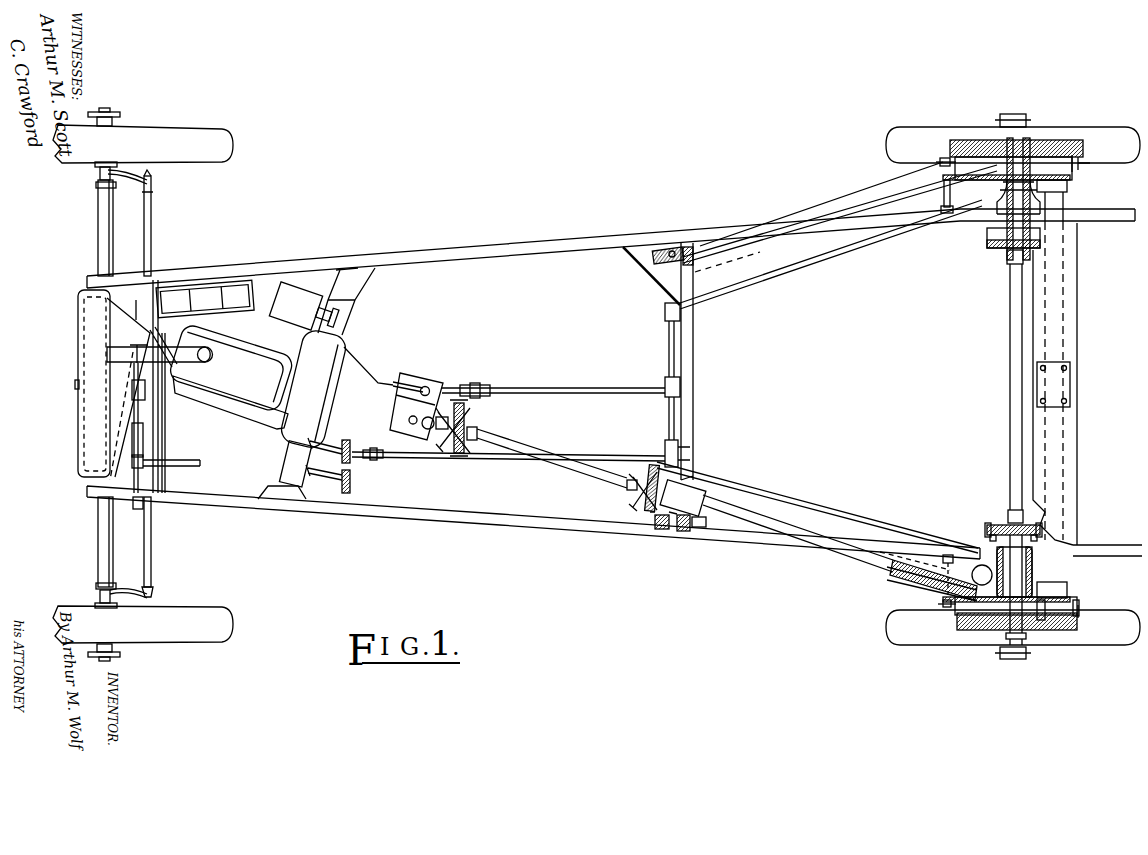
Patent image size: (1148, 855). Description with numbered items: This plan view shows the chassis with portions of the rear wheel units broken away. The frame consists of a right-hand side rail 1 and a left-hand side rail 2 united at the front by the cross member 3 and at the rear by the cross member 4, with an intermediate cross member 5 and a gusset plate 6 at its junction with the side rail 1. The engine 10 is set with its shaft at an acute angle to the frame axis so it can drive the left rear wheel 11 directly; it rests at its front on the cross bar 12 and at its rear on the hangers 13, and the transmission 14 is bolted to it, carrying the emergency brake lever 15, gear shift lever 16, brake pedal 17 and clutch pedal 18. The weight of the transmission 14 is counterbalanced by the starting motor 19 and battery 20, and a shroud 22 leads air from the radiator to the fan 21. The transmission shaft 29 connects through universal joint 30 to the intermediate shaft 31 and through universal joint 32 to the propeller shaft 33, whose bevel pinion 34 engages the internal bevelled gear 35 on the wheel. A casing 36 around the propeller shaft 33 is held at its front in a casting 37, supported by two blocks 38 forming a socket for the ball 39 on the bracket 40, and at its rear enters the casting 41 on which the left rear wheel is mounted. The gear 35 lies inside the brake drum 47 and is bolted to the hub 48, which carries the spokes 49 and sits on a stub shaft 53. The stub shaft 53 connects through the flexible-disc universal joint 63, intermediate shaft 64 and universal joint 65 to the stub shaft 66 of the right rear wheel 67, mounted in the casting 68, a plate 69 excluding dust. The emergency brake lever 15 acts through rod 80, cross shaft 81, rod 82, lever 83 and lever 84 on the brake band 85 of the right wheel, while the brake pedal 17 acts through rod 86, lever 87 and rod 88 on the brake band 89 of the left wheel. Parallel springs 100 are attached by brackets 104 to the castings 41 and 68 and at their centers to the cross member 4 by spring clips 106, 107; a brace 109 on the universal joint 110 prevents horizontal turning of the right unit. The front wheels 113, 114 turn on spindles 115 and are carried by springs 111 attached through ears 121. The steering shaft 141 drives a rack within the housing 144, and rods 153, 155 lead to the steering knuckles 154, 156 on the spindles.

The right-hand side rail 1 is at (545, 241).
The left-hand side rail 2 is at (562, 530).
The cross member 3 is at (85, 290).
The cross member 4 is at (1078, 315).
The intermediate cross member 5 is at (705, 393).
The gusset plate 6 is at (650, 273).
The engine 10 is at (260, 408).
The rear wheel 11 is at (955, 645).
The cross bar 12 is at (165, 443).
The hangers 13 is at (260, 492).
The transmission 14 is at (387, 387).
The emergency brake lever 15 is at (420, 388).
The gear shift lever 16 is at (432, 400).
The brake pedal 17 is at (352, 455).
The clutch pedal 18 is at (350, 483).
The starting motor 19 is at (287, 297).
The battery 20 is at (200, 300).
The fan 21 is at (118, 412).
The shroud 22 is at (122, 325).
The transmission shaft 29 is at (460, 403).
The universal joint 30 is at (480, 425).
The intermediate shaft 31 is at (520, 443).
The universal joint 32 is at (647, 512).
The propeller shaft 33 is at (900, 574).
The bevel pinion 34 is at (993, 550).
The internal bevelled gear 35 is at (990, 620).
The casing 36 is at (853, 564).
The casting 37 is at (695, 492).
The blocks 38 is at (683, 531).
The ball 39 is at (664, 530).
The bracket 40 is at (705, 527).
The casting 41 is at (917, 584).
The brake drum 47 is at (1070, 612).
The rear wheel hub 48 is at (1023, 630).
The spokes 49 is at (1045, 620).
The stub shaft 53 is at (1025, 578).
The universal joint 63 is at (1000, 510).
The intermediate shaft 64 is at (1010, 480).
The universal joint 65 is at (987, 250).
The stub shaft 66 is at (980, 198).
The right rear wheel 67 is at (948, 128).
The casting 68 is at (995, 208).
The plate 69 is at (968, 140).
The rod 80 is at (580, 390).
The cross shaft 81 is at (668, 352).
The rod 82 is at (790, 270).
The lever 83 is at (947, 560).
The lever 84 is at (943, 608).
The brake band 85 is at (1078, 168).
The rod 86 is at (460, 457).
The lever 87 is at (665, 448).
The rod 88 is at (783, 497).
The brake band 89 is at (1080, 605).
The spring 100 is at (1058, 455).
The brackets 104 is at (1067, 590).
The spring clip 106 is at (1068, 400).
The spring clip 107 is at (1068, 370).
The brace 109 is at (857, 203).
The universal joint 110 is at (672, 248).
The spring 111 is at (100, 522).
The front wheel 113 is at (125, 126).
The front wheel 114 is at (138, 647).
The spindle 115 is at (100, 600).
The ear 121 is at (100, 585).
The steering shaft 141 is at (190, 466).
The housing 144 is at (137, 505).
The rod 153 is at (152, 543).
The steering knuckle 154 is at (128, 590).
The rod 155 is at (152, 235).
The steering knuckle 156 is at (125, 170).